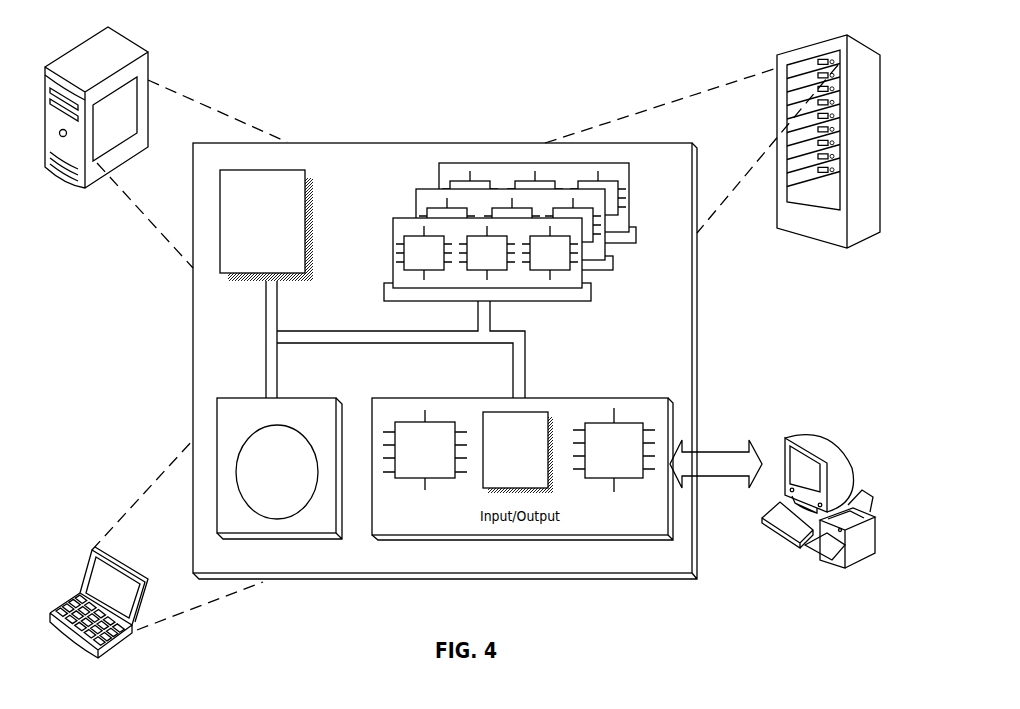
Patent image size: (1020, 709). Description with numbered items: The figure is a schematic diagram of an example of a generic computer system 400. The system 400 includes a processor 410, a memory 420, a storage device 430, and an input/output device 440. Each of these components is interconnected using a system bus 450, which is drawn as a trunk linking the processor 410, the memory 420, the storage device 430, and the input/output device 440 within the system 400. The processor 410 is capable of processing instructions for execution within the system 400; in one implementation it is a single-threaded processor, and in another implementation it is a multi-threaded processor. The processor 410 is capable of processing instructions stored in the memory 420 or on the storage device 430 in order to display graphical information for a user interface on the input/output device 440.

The generic computer system 400 is at (323, 46).
The processor 410 is at (300, 265).
The memory 420 is at (632, 272).
The storage device 430 is at (330, 524).
The input/output device 440 is at (787, 445).
The system bus 450 is at (393, 343).